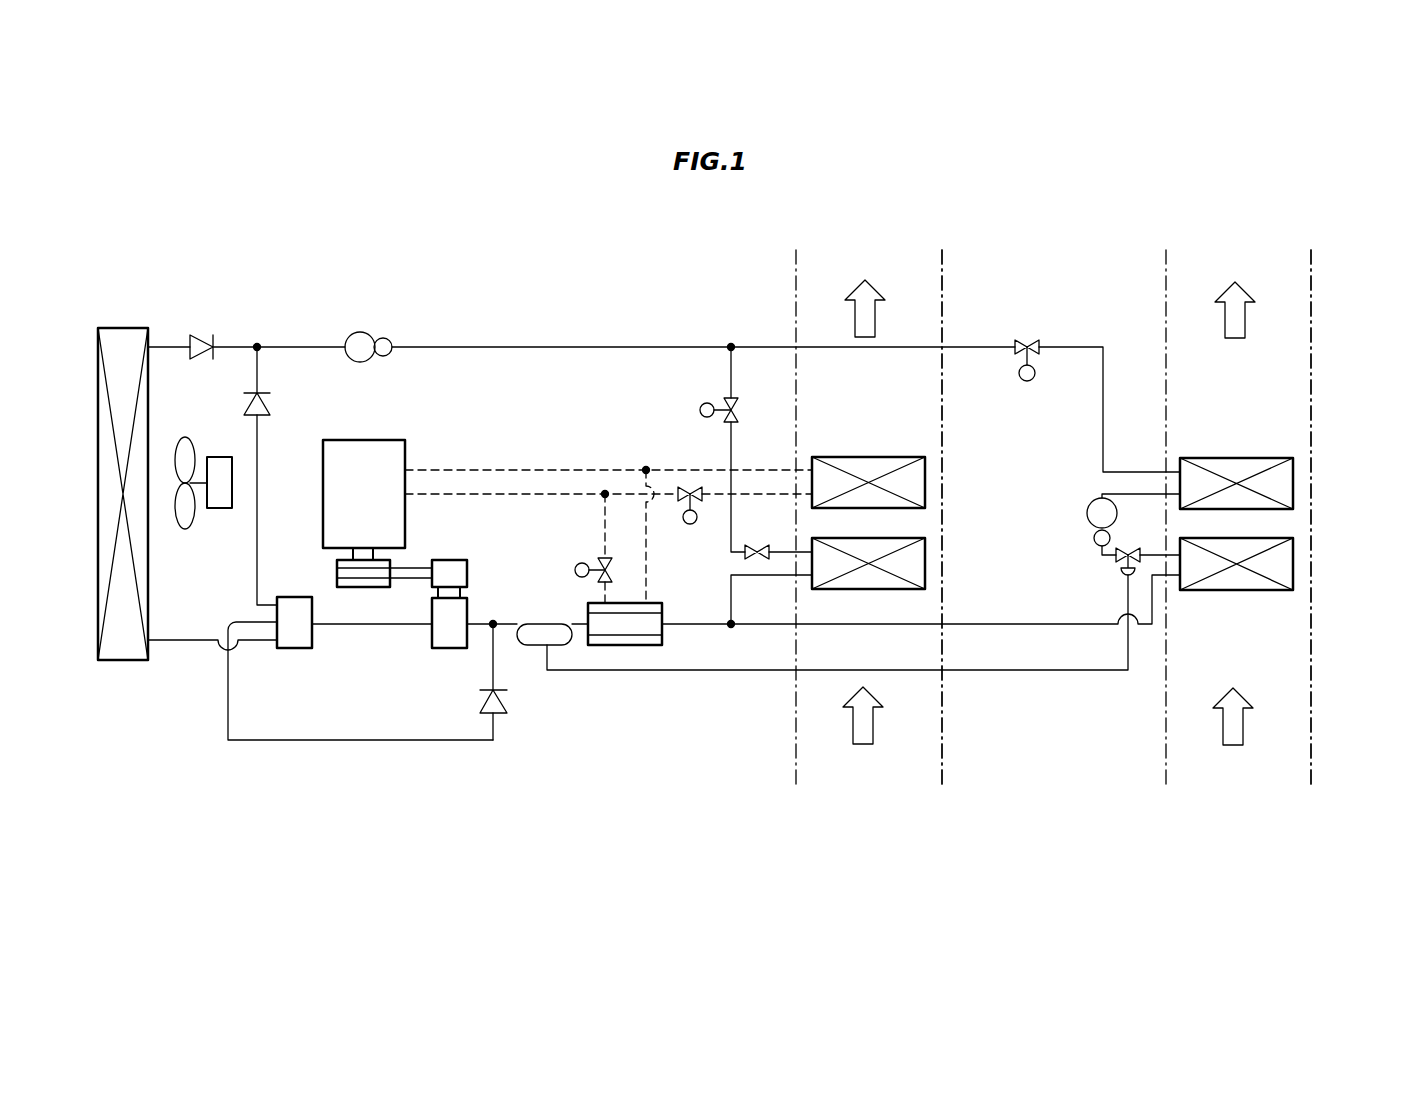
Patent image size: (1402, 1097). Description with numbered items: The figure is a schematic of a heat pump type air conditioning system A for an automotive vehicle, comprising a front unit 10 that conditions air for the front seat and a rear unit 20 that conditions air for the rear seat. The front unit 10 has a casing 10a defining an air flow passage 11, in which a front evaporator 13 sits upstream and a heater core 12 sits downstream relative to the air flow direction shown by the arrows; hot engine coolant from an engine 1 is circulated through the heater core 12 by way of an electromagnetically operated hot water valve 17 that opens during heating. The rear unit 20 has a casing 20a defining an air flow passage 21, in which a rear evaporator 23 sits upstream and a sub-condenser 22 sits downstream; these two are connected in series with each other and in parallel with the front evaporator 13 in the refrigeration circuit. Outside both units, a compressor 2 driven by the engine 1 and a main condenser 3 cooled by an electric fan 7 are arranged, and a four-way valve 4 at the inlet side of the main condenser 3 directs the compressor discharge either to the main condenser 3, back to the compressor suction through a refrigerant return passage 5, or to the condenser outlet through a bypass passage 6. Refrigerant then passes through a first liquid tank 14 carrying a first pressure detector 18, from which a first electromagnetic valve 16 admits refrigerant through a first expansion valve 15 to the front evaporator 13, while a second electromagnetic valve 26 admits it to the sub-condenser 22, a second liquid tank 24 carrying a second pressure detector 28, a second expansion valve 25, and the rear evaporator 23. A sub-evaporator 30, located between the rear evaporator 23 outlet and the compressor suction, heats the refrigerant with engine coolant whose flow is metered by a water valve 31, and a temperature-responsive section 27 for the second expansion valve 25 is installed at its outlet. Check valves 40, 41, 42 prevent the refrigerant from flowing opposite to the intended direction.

The engine 1 is at (362, 440).
The compressor 2 is at (450, 650).
The main condenser 3 is at (123, 328).
The four-way valve 4 is at (293, 650).
The refrigerant return passage 5 is at (357, 742).
The bypass passage 6 is at (258, 450).
The electric fan 7 is at (201, 517).
The front unit 10 is at (788, 737).
The casing 10a is at (945, 705).
The air flow passage 11 is at (883, 512).
The heater core 12 is at (928, 482).
The front evaporator 13 is at (928, 564).
The first liquid tank 14 is at (360, 332).
The first expansion valve 15 is at (756, 545).
The first electromagnetic valve 16 is at (700, 411).
The hot water valve 17 is at (690, 525).
The first pressure detector 18 is at (392, 340).
The rear unit 20 is at (1160, 737).
The casing 20a is at (1313, 705).
The air flow passage 21 is at (1254, 513).
The sub-condenser 22 is at (1296, 483).
The rear evaporator 23 is at (1296, 565).
The second liquid tank 24 is at (1087, 516).
The second expansion valve 25 is at (1118, 566).
The second electromagnetic valve 26 is at (1028, 340).
The temperature-responsive section 27 is at (535, 622).
The second pressure detector 28 is at (1094, 540).
The sub-evaporator 30 is at (664, 618).
The water valve 31 is at (575, 566).
The check valve 40 is at (205, 335).
The check valve 41 is at (243, 405).
The check valve 42 is at (510, 700).
The heat pump type air conditioning system A is at (1100, 228).